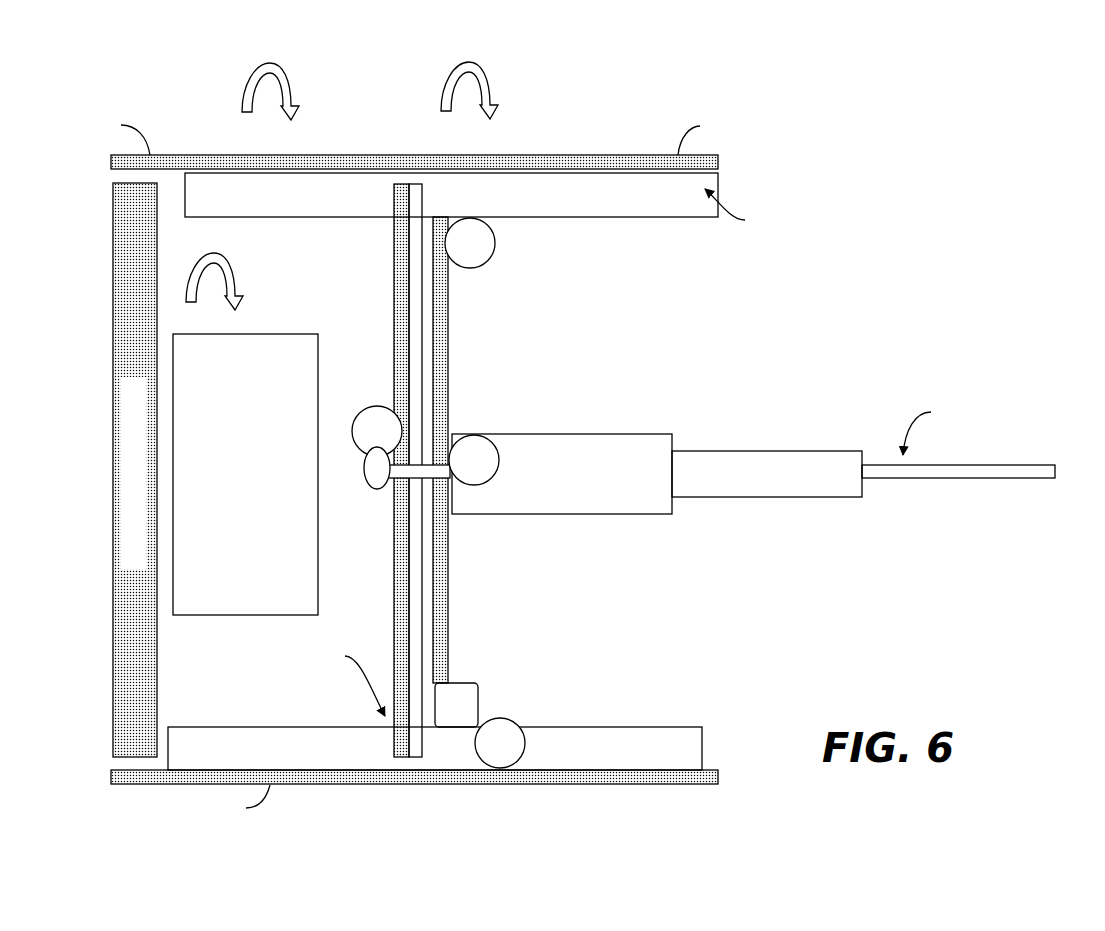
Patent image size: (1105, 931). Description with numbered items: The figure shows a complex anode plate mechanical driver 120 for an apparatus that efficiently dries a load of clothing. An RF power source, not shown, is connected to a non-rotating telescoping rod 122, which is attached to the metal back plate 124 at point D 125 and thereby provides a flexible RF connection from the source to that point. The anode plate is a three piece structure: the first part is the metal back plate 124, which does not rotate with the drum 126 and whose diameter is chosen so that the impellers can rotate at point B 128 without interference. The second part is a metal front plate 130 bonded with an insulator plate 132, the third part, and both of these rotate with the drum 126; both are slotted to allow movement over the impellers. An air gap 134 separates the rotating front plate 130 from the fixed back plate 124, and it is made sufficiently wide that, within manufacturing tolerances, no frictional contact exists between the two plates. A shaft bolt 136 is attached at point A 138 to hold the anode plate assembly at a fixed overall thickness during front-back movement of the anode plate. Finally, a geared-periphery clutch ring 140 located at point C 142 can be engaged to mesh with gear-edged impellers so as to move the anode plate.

The complex anode plate mechanical driver 120 is at (848, 84).
The non-rotating telescoping rod 122 is at (697, 451).
The metal back plate 124 is at (449, 300).
The point D 125 is at (500, 456).
The drum 126 is at (240, 155).
The point B 128 is at (496, 245).
The metal front plate 130 is at (386, 316).
The insulator plate 132 is at (413, 180).
The air gap 134 is at (429, 726).
The shaft bolt 136 is at (378, 490).
The point A 138 is at (375, 406).
The geared-periphery clutch ring 140 is at (458, 683).
The point C 142 is at (505, 718).